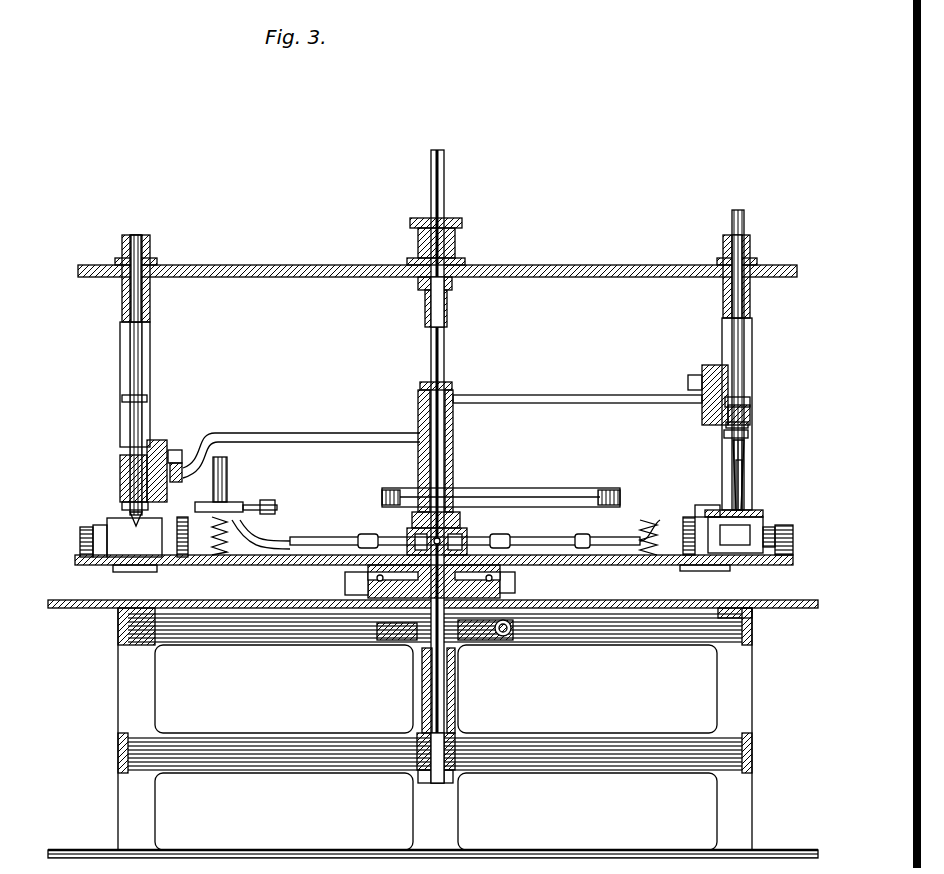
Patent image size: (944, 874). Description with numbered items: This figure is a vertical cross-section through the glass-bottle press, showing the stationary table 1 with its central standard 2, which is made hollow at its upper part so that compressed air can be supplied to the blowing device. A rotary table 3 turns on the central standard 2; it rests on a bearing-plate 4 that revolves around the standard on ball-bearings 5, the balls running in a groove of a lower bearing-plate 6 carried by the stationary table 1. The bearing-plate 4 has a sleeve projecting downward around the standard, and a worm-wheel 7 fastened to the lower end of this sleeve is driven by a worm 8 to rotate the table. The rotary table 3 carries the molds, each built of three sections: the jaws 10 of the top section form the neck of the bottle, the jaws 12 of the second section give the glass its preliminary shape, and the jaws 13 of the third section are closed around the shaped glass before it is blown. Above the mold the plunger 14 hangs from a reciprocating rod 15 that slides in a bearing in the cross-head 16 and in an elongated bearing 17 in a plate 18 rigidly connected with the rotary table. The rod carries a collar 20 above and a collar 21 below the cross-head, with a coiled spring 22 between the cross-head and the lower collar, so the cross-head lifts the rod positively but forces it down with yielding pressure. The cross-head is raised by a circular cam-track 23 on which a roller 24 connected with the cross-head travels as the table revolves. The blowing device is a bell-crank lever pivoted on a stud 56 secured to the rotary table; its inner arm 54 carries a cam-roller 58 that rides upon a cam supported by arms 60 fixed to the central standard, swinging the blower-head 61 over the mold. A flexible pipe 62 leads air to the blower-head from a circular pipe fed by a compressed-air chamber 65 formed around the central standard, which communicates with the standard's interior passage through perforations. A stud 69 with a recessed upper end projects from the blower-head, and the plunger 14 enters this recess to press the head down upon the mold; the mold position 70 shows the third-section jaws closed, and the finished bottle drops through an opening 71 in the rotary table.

The stationary table 1 is at (748, 681).
The central standard 2 is at (432, 690).
The rotary table 3 is at (793, 562).
The bearing-plate 4 is at (515, 575).
The ball-bearings 5 is at (340, 583).
The bearing-plate 6 is at (505, 605).
The worm-wheel 7 is at (385, 640).
The worm 8 is at (508, 636).
The jaws of the top section of the mold 10 is at (95, 530).
The jaws of the lower section of the mold 12 is at (132, 540).
The jaws of the third section of the mold 13 is at (700, 571).
The plunger 14 is at (140, 520).
The reciprocating rod 15 is at (150, 395).
The cross-head 16 is at (122, 470).
The elongated bearing 17 is at (150, 245).
The plate 18 is at (605, 264).
The collar 20 is at (135, 440).
The collar 21 is at (748, 427).
The coiled spring 22 is at (122, 506).
The cam-track 23 is at (225, 442).
The roller 24 is at (180, 450).
The inner arm 54 is at (268, 516).
The stud 56 is at (228, 545).
The cam-roller 58 is at (265, 500).
The arms 60 is at (487, 490).
The blower-head 61 is at (720, 512).
The flexible pipe 62 is at (310, 537).
The compressed-air chamber 65 is at (462, 530).
The stud 69 is at (227, 470).
The mold position 70 is at (697, 510).
The opening 71 is at (135, 572).